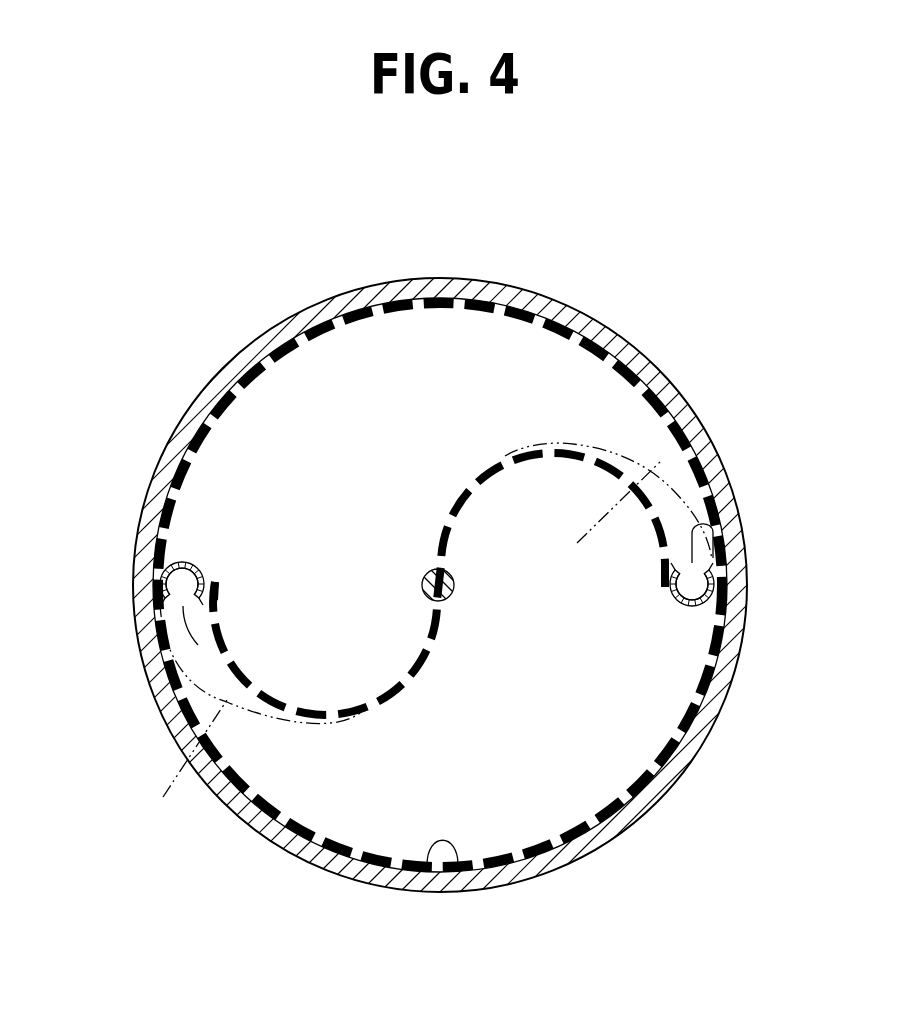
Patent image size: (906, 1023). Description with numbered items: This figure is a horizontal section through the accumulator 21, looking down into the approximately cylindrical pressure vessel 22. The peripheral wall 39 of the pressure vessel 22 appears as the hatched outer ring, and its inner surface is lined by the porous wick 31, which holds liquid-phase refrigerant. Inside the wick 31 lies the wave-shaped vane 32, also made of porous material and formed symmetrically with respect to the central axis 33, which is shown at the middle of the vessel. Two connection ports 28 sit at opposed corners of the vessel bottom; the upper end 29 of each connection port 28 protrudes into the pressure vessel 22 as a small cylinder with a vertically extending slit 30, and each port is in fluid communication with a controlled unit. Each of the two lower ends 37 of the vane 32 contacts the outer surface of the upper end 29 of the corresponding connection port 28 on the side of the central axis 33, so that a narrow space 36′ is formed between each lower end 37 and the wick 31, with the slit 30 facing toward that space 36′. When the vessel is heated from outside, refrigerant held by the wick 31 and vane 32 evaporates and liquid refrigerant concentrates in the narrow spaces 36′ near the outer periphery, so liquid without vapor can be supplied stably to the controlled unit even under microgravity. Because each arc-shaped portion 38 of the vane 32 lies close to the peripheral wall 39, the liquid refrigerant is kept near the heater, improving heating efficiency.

The accumulator 21 is at (640, 288).
The pressure vessel 22 is at (528, 288).
The connection port 28 is at (187, 555).
The upper end of the connection port 29 is at (200, 568).
The slit 30 is at (198, 642).
The wick 31 is at (458, 865).
The vane 32 is at (458, 490).
The central axis 33 is at (455, 590).
The narrow space 36′ is at (200, 645).
The lower end of the vane 37 is at (240, 672).
The arc-shaped portion 38 is at (270, 707).
The peripheral wall 39 is at (637, 807).